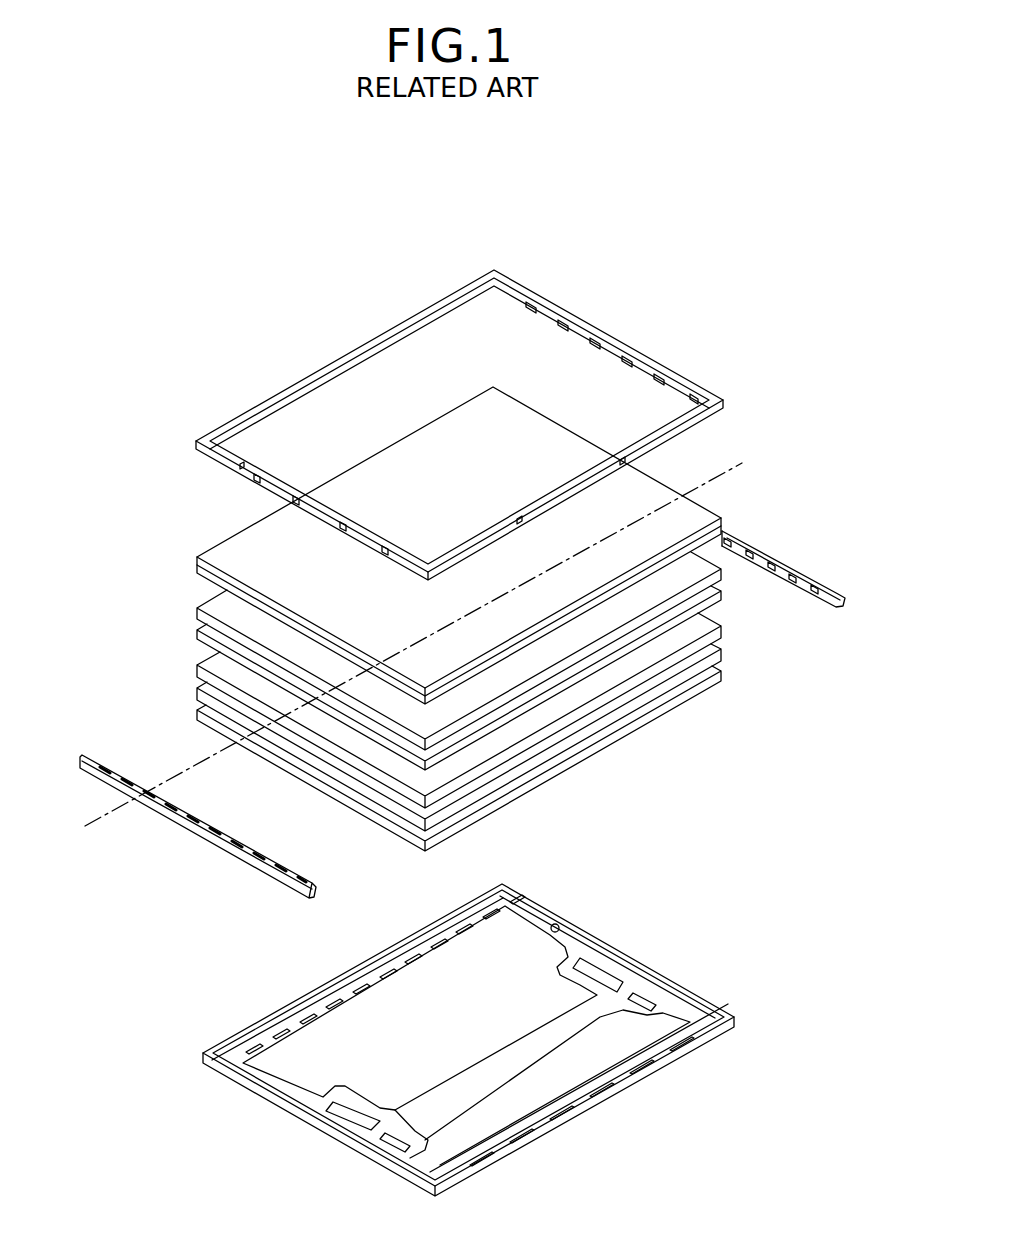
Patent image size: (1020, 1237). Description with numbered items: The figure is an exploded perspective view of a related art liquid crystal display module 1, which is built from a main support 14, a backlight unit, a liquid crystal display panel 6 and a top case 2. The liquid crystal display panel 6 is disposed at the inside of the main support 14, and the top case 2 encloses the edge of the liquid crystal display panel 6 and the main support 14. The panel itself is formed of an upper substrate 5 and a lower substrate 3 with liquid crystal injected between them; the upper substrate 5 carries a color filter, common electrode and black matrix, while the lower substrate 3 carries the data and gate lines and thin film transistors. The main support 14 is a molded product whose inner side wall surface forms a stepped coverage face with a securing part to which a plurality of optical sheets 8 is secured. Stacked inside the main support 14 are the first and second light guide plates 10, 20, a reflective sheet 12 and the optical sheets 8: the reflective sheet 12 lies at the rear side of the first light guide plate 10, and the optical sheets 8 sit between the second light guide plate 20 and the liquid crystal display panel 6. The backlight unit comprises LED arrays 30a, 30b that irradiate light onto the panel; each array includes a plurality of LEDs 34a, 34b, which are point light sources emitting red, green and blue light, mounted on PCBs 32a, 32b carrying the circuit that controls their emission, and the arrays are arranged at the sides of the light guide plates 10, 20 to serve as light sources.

The liquid crystal display module 1 is at (692, 270).
The top case 2 is at (713, 394).
The lower substrate 3 is at (197, 570).
The upper substrate 5 is at (197, 557).
The liquid crystal display panel 6 is at (413, 545).
The optical sheets 8 is at (716, 589).
The second light guide plate 20 is at (725, 630).
The first light guide plate 10 is at (725, 652).
The reflective sheet 12 is at (725, 672).
The main support 14 is at (672, 973).
The LED array 30a is at (171, 782).
The PCB 32a is at (92, 703).
The LEDs 34a is at (100, 762).
The LED array 30b is at (797, 550).
The PCB 32b is at (792, 576).
The LEDs 34b is at (840, 598).